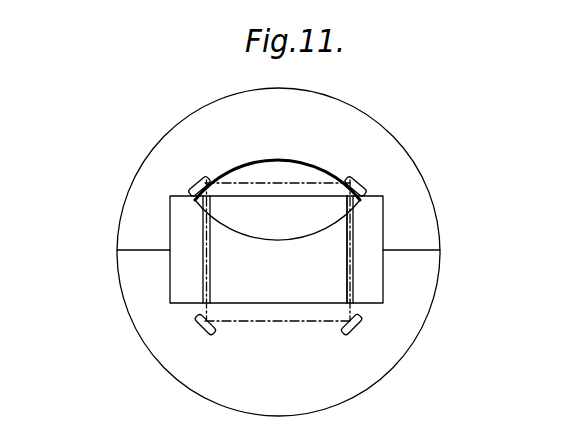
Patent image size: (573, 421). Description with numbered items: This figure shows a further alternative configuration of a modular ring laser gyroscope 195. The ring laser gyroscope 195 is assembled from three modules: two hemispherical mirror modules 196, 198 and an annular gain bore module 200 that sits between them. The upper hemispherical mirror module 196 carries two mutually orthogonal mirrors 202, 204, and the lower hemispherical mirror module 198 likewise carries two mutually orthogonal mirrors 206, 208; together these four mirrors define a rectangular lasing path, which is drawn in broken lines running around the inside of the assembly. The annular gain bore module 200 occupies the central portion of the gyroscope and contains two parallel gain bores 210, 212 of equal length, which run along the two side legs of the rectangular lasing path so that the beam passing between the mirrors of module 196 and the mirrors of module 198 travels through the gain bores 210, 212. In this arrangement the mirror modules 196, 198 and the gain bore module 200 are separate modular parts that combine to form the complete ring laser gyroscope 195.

The ring laser gyroscope 195 is at (124, 159).
The hemispherical mirror module 196 is at (328, 130).
The hemispherical mirror module 198 is at (354, 388).
The annular gain bore module 200 is at (288, 238).
The mirror 202 is at (188, 135).
The mirror 204 is at (352, 180).
The mirror 206 is at (197, 323).
The mirror 208 is at (360, 320).
The gain bore 210 is at (200, 216).
The gain bore 212 is at (355, 223).